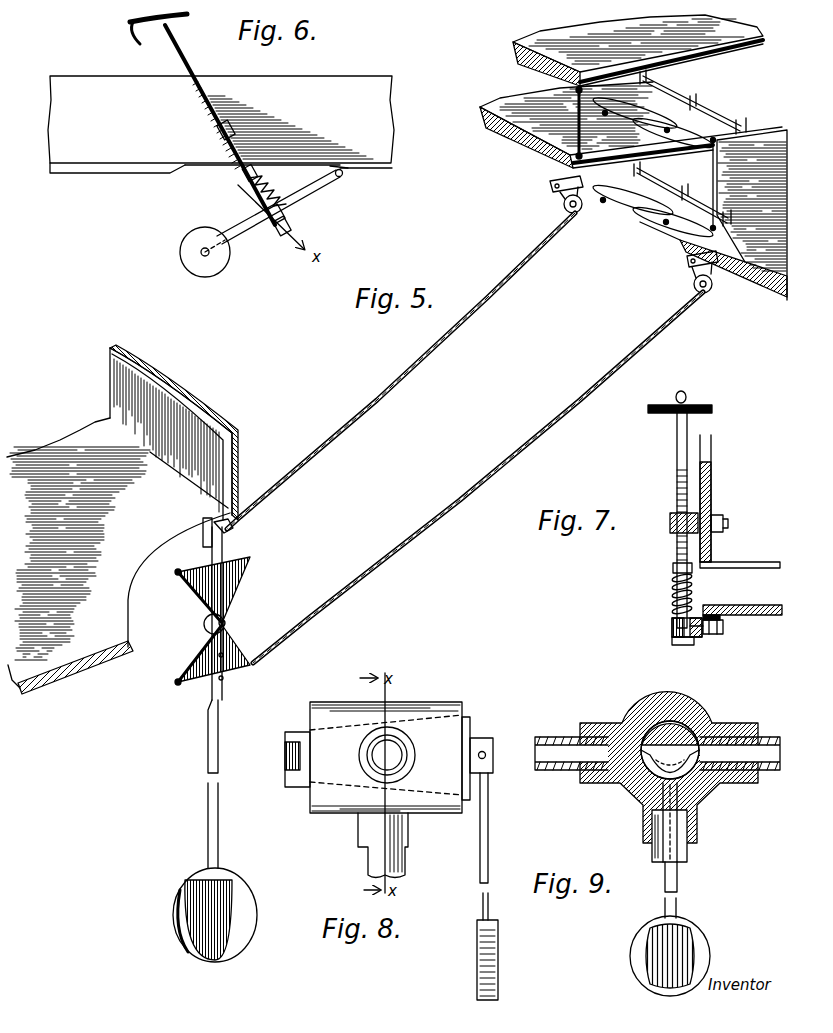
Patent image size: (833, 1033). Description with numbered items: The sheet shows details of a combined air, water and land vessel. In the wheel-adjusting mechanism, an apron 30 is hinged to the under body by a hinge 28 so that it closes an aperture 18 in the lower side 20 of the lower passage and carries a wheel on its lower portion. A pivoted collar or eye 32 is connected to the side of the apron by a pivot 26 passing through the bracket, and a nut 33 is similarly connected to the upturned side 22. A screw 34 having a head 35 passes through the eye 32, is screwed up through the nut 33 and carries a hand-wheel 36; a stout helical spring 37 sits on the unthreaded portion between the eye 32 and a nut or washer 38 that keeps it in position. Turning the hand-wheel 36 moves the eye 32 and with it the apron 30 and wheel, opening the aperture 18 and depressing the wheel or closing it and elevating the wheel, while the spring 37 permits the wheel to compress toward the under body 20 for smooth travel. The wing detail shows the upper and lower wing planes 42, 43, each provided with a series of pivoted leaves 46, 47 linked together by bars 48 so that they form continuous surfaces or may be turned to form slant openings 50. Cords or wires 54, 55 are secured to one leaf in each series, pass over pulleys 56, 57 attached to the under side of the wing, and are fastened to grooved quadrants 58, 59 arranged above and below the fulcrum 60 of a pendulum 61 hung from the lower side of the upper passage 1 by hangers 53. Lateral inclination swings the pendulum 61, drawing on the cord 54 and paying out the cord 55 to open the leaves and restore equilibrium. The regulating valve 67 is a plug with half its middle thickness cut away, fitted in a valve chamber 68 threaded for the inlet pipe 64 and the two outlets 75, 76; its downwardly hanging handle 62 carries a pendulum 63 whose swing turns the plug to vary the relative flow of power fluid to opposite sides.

In FIG. 5, the upper passage 1 is at (122, 519).
In FIG. 6, the closable aperture 18 is at (200, 168).
In FIG. 6, the lower side 20 is at (125, 173).
In FIG. 7, the lower side 20 is at (717, 569).
In FIG. 6, the upturned side 22 is at (95, 76).
In FIG. 7, the upturned side 22 is at (711, 452).
In FIG. 7, the pivot 26 is at (705, 632).
In FIG. 6, the hinge or bracket 28 is at (350, 176).
In FIG. 7, the hinge or bracket 28 is at (723, 624).
In FIG. 6, the apron 30 is at (240, 230).
In FIG. 7, the apron 30 is at (736, 605).
In FIG. 6, the pivoted collar or eye 32 is at (286, 210).
In FIG. 7, the pivoted collar or eye 32 is at (672, 630).
In FIG. 6, the nut 33 is at (212, 133).
In FIG. 7, the nut 33 is at (670, 516).
In FIG. 6, the screw 34 is at (187, 40).
In FIG. 7, the screw 34 is at (677, 458).
In FIG. 6, the head 35 is at (290, 222).
In FIG. 7, the head 35 is at (694, 645).
In FIG. 6, the hand-wheel 36 is at (186, 14).
In FIG. 7, the hand-wheel 36 is at (712, 409).
In FIG. 6, the helical spring 37 is at (246, 184).
In FIG. 7, the helical spring 37 is at (672, 586).
In FIG. 6, the nut or washer 38 is at (258, 170).
In FIG. 7, the nut or washer 38 is at (673, 568).
In FIG. 5, the upper wing plane 42 is at (508, 54).
In FIG. 5, the lower wing plane 43 is at (512, 155).
In FIG. 5, the pivoted leaves 46 is at (722, 60).
In FIG. 5, the pivoted leaves 47 is at (643, 225).
In FIG. 5, the bars 48 is at (680, 98).
In FIG. 5, the slant openings 50 is at (635, 222).
In FIG. 5, the hangers 53 is at (234, 530).
In FIG. 5, the cord or wire 54 is at (506, 284).
In FIG. 5, the cord or wire 55 is at (608, 374).
In FIG. 5, the pulley 56 is at (582, 208).
In FIG. 5, the pulley 57 is at (712, 287).
In FIG. 5, the upper grooved quadrant 58 is at (246, 561).
In FIG. 5, the lower grooved quadrant 59 is at (250, 662).
In FIG. 5, the fulcrum 60 is at (230, 622).
In FIG. 5, the pendulum 61 is at (235, 888).
In FIG. 8, the handle 62 is at (488, 855).
In FIG. 9, the handle 62 is at (678, 886).
In FIG. 8, the pendulum 63 is at (498, 948).
In FIG. 9, the pendulum 63 is at (706, 950).
In FIG. 8, the inlet pipe 64 is at (405, 860).
In FIG. 9, the inlet pipe 64 is at (688, 853).
In FIG. 9, the regulating valve 67 is at (706, 714).
In FIG. 8, the valve chamber 68 is at (428, 706).
In FIG. 9, the valve chamber 68 is at (625, 795).
In FIG. 9, the outlet 75 is at (571, 739).
In FIG. 9, the outlet 76 is at (742, 738).